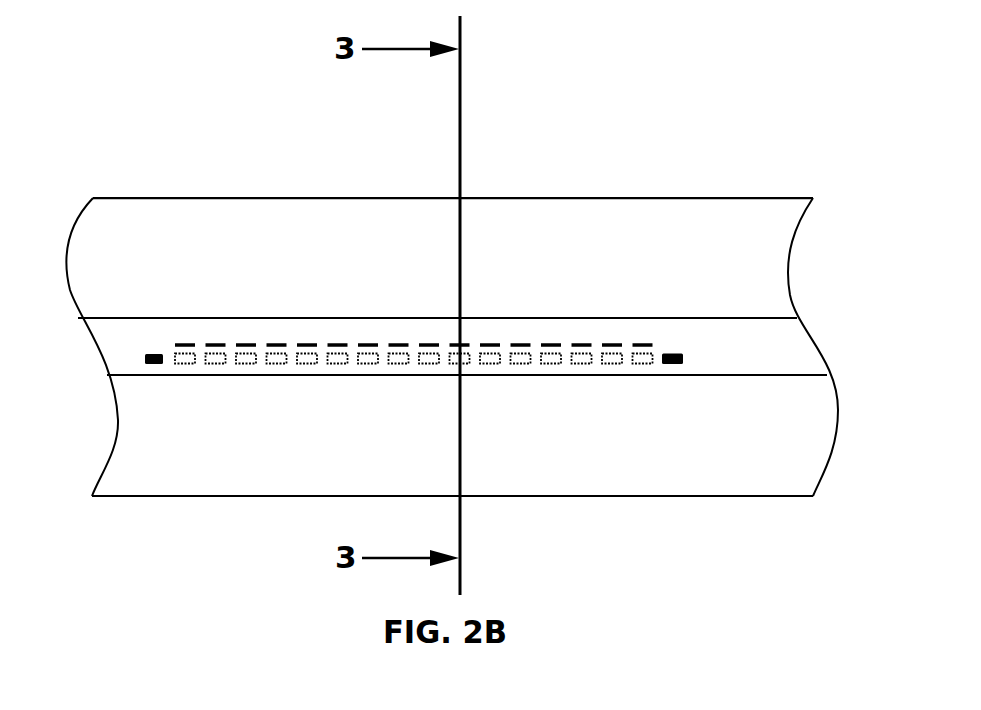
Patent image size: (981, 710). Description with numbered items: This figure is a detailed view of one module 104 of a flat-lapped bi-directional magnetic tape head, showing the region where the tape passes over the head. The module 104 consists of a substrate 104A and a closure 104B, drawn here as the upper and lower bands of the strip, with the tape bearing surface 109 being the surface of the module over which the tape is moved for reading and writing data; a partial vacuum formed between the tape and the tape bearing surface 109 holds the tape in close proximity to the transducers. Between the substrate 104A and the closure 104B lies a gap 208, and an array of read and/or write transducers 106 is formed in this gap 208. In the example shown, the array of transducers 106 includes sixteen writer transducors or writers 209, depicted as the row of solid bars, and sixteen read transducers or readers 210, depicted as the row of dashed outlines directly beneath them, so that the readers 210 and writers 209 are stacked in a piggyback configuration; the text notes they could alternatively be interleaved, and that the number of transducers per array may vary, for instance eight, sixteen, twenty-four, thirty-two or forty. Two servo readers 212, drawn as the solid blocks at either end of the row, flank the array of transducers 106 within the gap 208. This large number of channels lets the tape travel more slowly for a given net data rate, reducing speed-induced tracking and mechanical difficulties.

The module 104 is at (102, 140).
The substrate 104A is at (213, 198).
The closure 104B is at (277, 497).
The tape bearing surface 109 is at (365, 280).
The read and/or write transducers 106 is at (421, 343).
The gap 208 is at (814, 343).
The writer transducers 209 is at (548, 341).
The read transducers 210 is at (551, 365).
The servo readers 212 is at (145, 358).